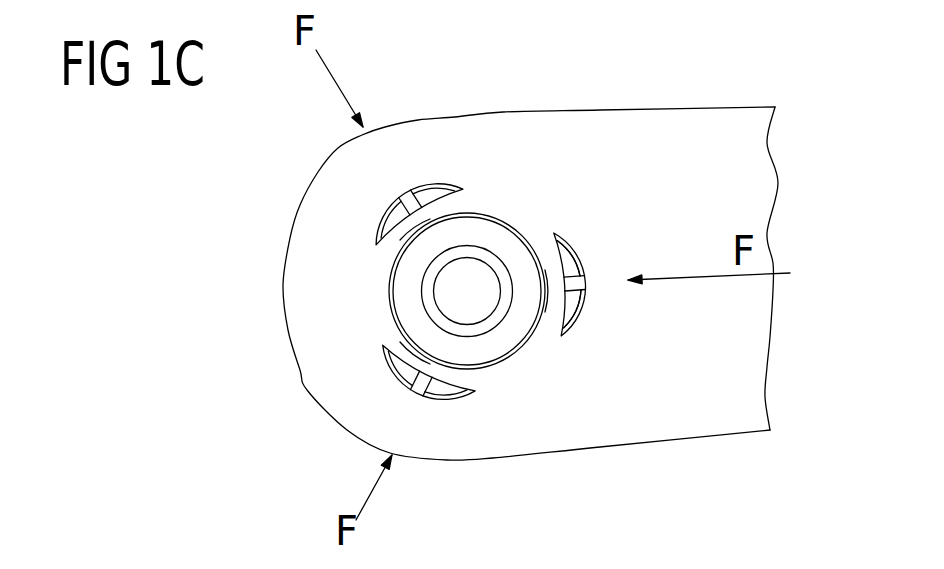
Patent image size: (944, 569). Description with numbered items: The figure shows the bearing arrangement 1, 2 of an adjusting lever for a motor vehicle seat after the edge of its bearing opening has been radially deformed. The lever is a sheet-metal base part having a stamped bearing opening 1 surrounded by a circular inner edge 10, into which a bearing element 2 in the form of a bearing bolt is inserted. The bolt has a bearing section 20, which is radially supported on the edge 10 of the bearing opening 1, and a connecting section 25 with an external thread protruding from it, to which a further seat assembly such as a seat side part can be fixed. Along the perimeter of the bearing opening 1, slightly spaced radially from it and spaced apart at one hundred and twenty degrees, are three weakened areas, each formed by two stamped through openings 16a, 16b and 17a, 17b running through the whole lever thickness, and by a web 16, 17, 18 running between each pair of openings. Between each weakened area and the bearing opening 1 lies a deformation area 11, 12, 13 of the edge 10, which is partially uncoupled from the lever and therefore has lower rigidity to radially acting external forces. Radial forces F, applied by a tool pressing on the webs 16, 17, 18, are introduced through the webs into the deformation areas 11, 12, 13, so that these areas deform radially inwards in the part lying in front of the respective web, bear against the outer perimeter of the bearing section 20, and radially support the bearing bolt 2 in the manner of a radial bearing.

The bearing opening 1 is at (523, 223).
The bearing element 2 is at (505, 218).
The inner edge 10 is at (514, 333).
The deformation area 11 is at (423, 358).
The deformation area 12 is at (427, 219).
The deformation area 13 is at (555, 290).
The web 16 is at (418, 390).
The through opening 16a is at (452, 398).
The through opening 16b is at (395, 373).
The web 17 is at (407, 200).
The through opening 17a is at (385, 213).
The through opening 17b is at (430, 190).
The web 18 is at (607, 278).
The bearing section 20 is at (390, 296).
The connecting section 25 is at (478, 245).